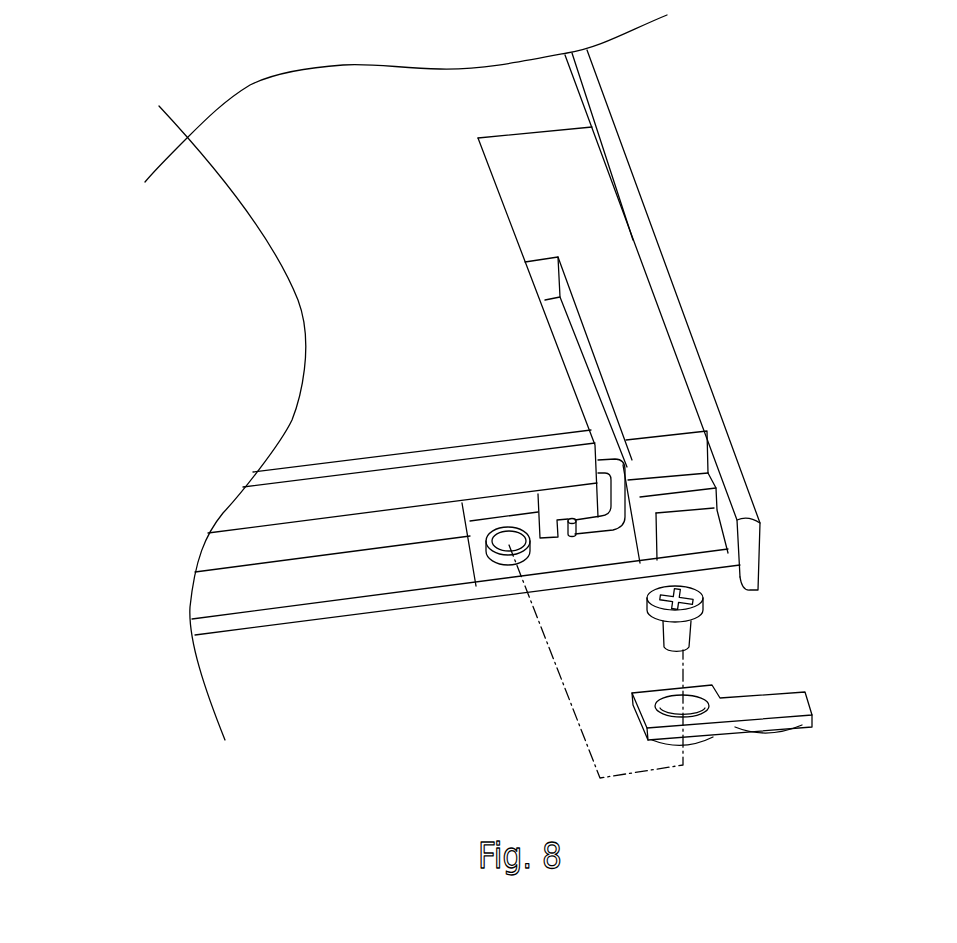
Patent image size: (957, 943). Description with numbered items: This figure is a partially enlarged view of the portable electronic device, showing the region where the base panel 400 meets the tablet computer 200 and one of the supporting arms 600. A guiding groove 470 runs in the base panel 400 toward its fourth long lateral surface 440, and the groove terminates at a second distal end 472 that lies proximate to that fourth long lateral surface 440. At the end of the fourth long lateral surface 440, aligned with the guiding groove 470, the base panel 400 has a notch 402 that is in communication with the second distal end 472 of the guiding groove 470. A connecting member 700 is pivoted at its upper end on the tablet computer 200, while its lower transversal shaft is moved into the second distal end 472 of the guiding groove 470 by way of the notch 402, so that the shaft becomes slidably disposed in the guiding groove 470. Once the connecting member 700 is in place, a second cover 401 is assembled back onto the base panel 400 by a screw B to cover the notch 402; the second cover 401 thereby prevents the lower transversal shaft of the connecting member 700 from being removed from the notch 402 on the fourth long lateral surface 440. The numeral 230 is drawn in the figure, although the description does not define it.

The supporting arm 600 is at (655, 183).
The guiding groove 470 is at (597, 388).
The connecting member 700 is at (641, 470).
The second distal end 472 is at (618, 543).
The notch 402 is at (588, 545).
The tablet computer 200 is at (306, 514).
The guide groove 230 is at (252, 507).
The base panel 400 is at (418, 616).
The fourth long lateral surface 440 is at (378, 604).
The screw B is at (680, 635).
The second cover 401 is at (808, 718).